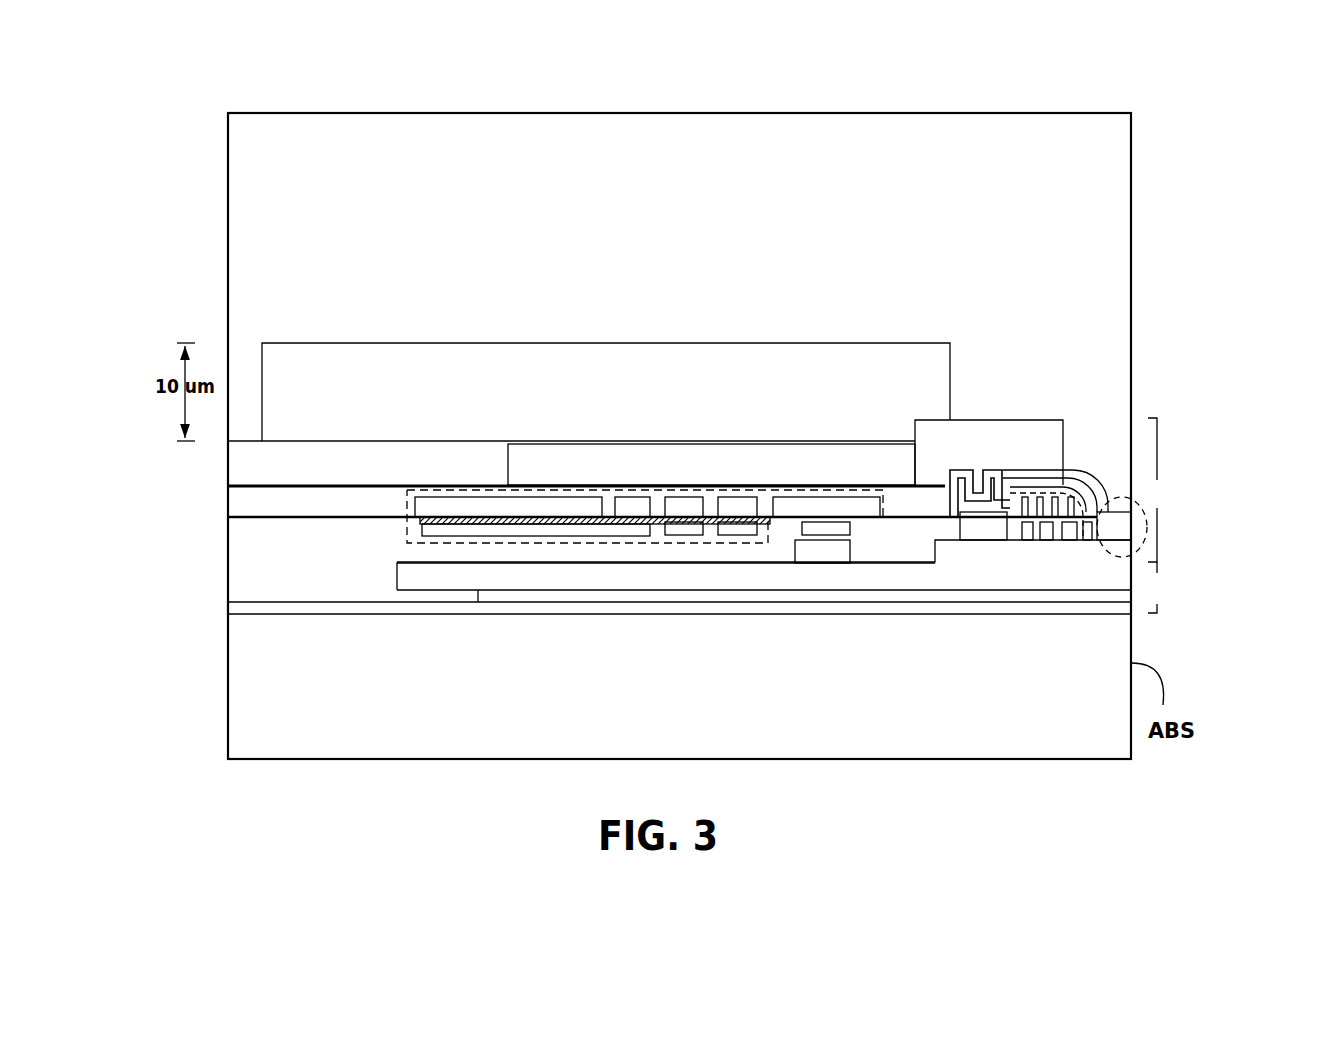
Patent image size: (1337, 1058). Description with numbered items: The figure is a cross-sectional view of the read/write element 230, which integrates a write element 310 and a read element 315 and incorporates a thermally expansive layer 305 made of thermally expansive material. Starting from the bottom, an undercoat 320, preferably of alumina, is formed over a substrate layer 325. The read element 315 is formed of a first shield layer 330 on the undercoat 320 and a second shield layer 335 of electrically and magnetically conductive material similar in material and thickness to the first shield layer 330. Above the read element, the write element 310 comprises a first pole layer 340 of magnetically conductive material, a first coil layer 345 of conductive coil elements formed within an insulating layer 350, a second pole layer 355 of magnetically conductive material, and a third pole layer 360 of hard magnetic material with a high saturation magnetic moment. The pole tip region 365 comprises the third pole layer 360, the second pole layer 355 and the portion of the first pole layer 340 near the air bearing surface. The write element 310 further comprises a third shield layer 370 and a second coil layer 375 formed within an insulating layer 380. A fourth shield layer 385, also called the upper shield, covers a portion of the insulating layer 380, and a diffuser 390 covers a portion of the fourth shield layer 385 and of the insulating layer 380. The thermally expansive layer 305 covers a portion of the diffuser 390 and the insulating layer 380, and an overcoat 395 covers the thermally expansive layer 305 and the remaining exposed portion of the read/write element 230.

The read/write element 230 is at (677, 94).
The overcoat 395 is at (788, 157).
The thermally expansive layer 305 is at (374, 468).
The diffuser 390 is at (742, 474).
The fourth shield layer 385 is at (1047, 472).
The third shield layer 370 is at (1103, 508).
The insulating layer I3 380 is at (945, 502).
The second coil layer 375 is at (1007, 487).
The first coil layer 345 is at (945, 522).
The first pole layer 340 is at (1006, 529).
The insulating layer I2 350 is at (1040, 541).
The third pole layer 360 is at (1088, 543).
The second pole layer 355 is at (1123, 542).
The pole tip region 365 is at (1160, 533).
The write element 310 is at (1160, 490).
The read element 315 is at (1160, 587).
The second shield layer 335 is at (632, 580).
The first shield layer 330 is at (527, 592).
The undercoat 320 is at (405, 610).
The substrate layer 325 is at (850, 729).